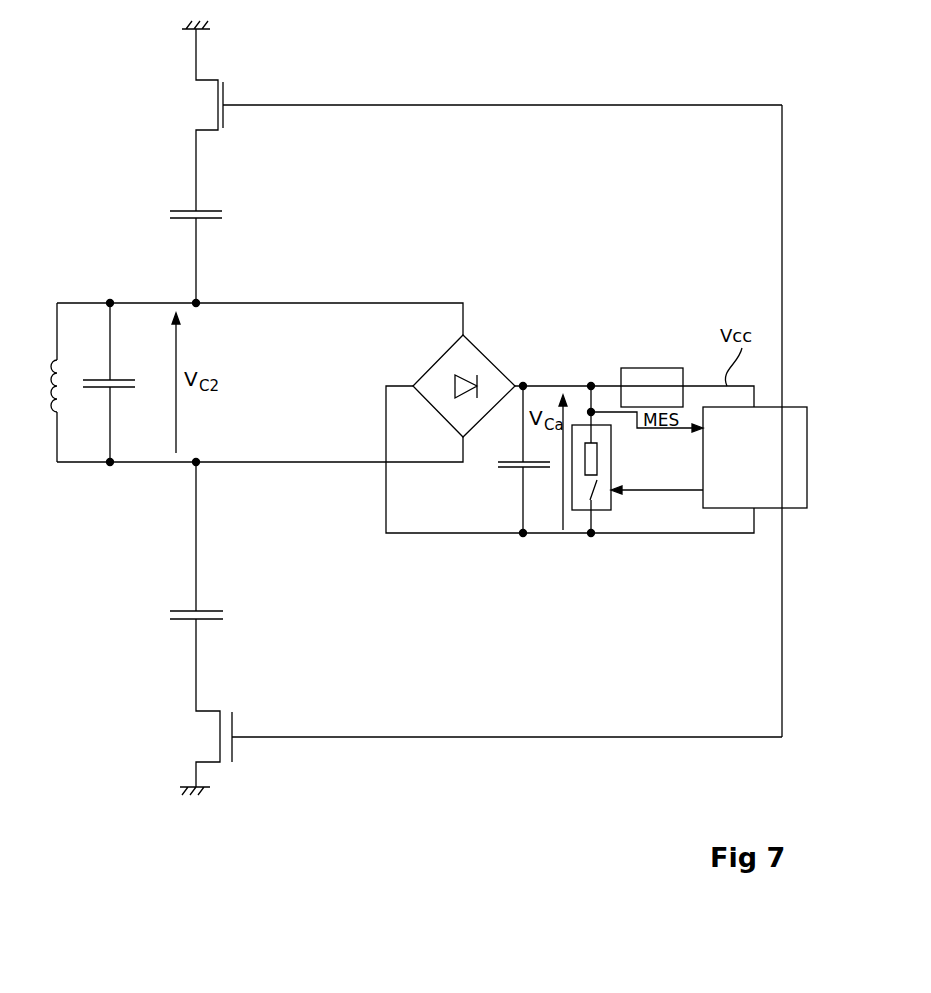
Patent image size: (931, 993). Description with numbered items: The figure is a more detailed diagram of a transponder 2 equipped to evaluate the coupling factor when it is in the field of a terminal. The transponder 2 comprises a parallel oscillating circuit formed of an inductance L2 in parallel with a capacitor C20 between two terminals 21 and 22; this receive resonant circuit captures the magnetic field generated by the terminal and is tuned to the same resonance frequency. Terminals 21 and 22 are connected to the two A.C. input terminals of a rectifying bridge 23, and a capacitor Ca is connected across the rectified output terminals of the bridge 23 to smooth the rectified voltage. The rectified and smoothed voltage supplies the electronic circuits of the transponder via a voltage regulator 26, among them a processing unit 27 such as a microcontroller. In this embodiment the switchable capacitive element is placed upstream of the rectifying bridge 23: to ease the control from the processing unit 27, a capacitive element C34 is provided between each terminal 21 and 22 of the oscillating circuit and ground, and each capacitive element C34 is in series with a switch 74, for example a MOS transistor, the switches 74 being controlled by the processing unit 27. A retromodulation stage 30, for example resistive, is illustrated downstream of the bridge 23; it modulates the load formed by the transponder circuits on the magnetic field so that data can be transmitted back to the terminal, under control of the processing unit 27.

The transponder 2 is at (182, 819).
The terminal 21 is at (108, 301).
The terminal 22 is at (110, 465).
The rectifying bridge 23 is at (492, 359).
The voltage regulator 26 is at (655, 368).
The processing unit 27 is at (723, 508).
The retromodulation stage 30 is at (612, 457).
The switch 74 is at (481, 408).
The capacitive element C34 is at (187, 402).
The resonant capacitor C20 is at (116, 382).
The inductance L2 is at (66, 387).
The capacitor Ca is at (523, 459).